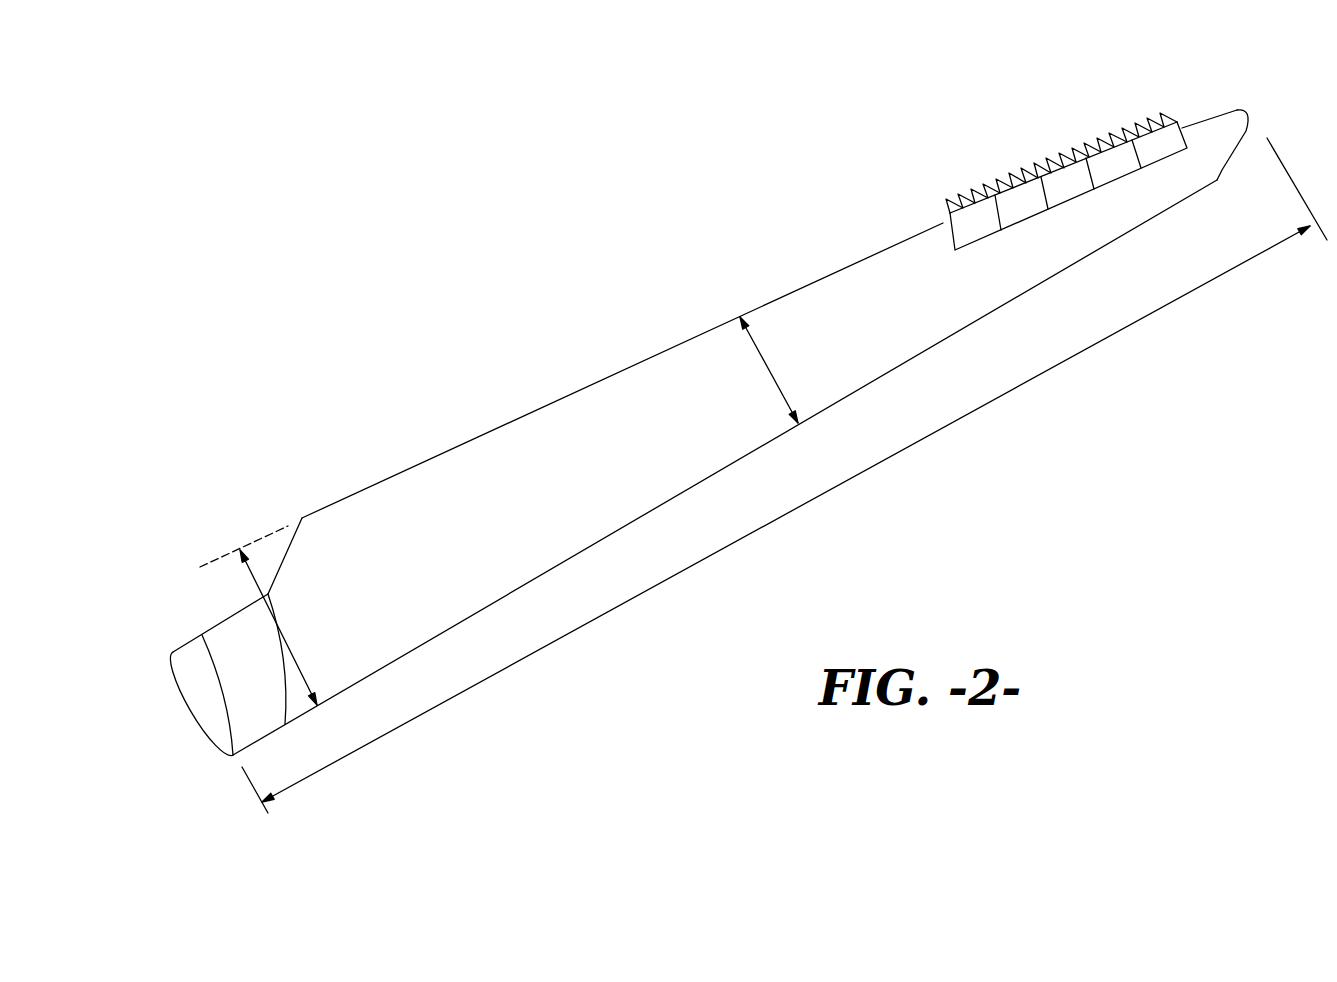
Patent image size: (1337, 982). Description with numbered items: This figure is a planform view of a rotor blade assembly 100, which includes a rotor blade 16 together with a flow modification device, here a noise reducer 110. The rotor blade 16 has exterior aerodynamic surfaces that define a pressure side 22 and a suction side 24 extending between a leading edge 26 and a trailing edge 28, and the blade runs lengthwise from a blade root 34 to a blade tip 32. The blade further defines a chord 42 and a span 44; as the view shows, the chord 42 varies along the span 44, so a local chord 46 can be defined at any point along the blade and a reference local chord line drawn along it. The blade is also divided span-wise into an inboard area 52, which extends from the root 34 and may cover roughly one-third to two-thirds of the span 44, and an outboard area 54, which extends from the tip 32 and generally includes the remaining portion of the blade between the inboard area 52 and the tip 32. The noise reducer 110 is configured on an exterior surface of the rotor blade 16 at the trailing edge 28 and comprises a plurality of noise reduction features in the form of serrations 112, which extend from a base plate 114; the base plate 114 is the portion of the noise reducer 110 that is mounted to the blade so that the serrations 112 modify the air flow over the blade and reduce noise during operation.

The rotor blade assembly 100 is at (447, 262).
The rotor blade 16 is at (492, 413).
The pressure side 22 is at (405, 503).
The suction side 24 is at (517, 590).
The leading edge 26 is at (440, 637).
The trailing edge 28 is at (323, 507).
The blade tip 32 is at (1219, 119).
The blade root 34 is at (252, 712).
The chord 42 is at (270, 613).
The span 44 is at (820, 498).
The local chord 46 is at (772, 370).
The inboard area 52 is at (618, 428).
The outboard area 54 is at (860, 312).
The noise reducer 110 is at (987, 170).
The serrations 112 is at (1052, 168).
The base plate 114 is at (960, 232).